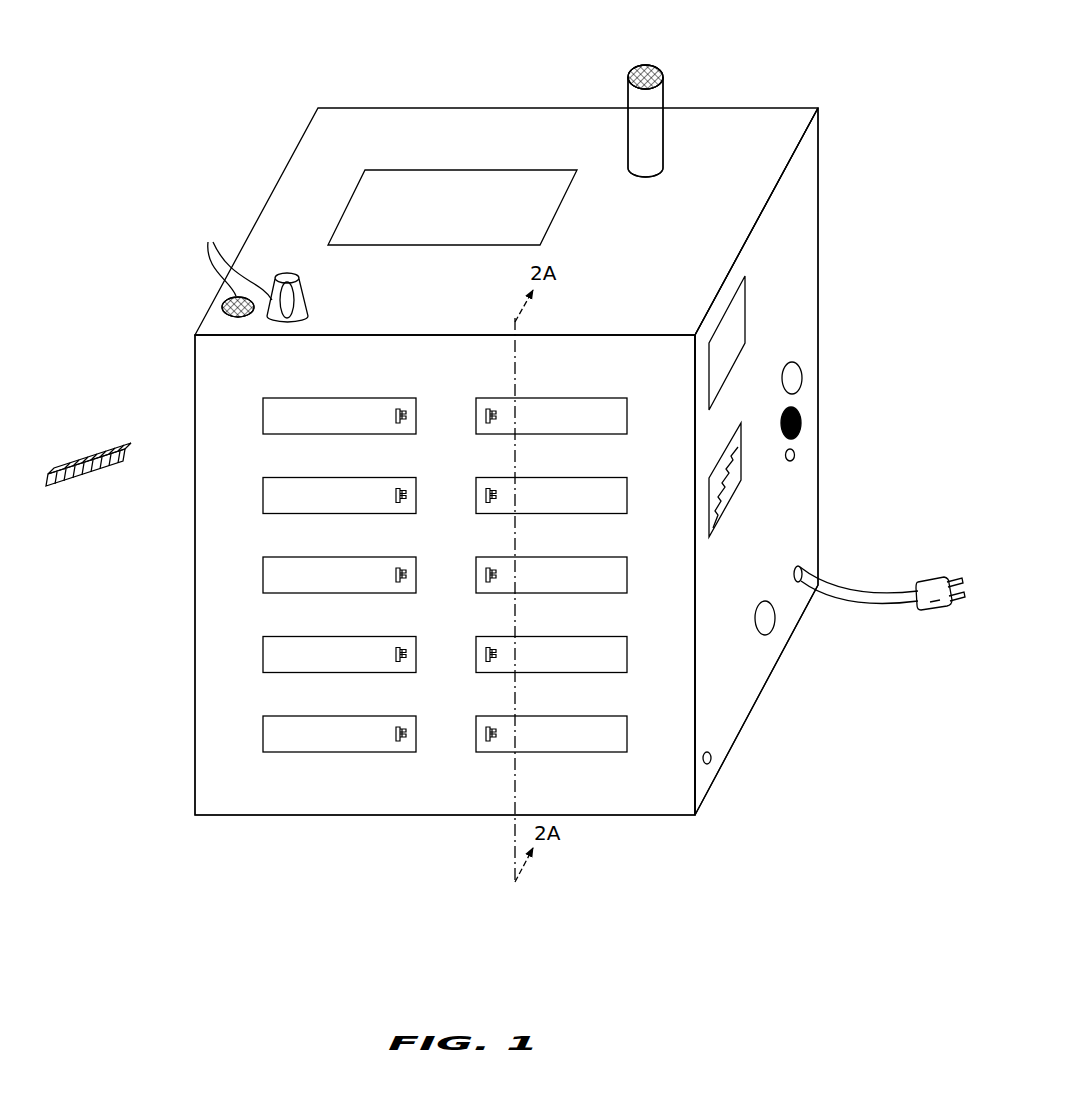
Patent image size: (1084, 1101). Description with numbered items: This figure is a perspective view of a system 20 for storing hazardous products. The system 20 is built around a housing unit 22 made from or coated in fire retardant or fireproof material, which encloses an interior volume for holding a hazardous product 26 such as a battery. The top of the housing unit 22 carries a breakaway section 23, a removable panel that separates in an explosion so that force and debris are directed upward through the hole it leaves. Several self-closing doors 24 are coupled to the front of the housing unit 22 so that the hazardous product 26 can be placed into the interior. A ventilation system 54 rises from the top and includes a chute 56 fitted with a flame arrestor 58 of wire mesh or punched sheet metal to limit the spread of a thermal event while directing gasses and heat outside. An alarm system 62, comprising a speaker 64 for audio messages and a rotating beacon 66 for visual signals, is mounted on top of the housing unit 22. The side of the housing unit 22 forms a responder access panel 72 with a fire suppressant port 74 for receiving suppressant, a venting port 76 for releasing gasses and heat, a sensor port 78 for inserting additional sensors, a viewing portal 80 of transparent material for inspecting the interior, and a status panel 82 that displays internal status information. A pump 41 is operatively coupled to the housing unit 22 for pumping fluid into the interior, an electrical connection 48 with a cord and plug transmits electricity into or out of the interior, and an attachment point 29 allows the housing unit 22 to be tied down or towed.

The system 20 is at (158, 238).
The housing unit 22 is at (165, 738).
The breakaway section 23 is at (352, 190).
The doors 24 is at (484, 753).
The hazardous product 26 is at (102, 480).
The attachment point 29 is at (712, 758).
The pump 41 is at (776, 618).
The electrical connection 48 is at (803, 570).
The ventilation system 54 is at (670, 92).
The chute 56 is at (628, 97).
The flame arrestor 58 is at (648, 66).
The alarm system 62 is at (235, 259).
The speaker 64 is at (222, 305).
The rotating beacon 66 is at (287, 272).
The responder access panel 72 is at (741, 704).
The fire suppressant port 74 is at (802, 378).
The venting port 76 is at (801, 423).
The sensor port 78 is at (795, 455).
The viewing portal 80 is at (748, 282).
The status panel 82 is at (717, 518).